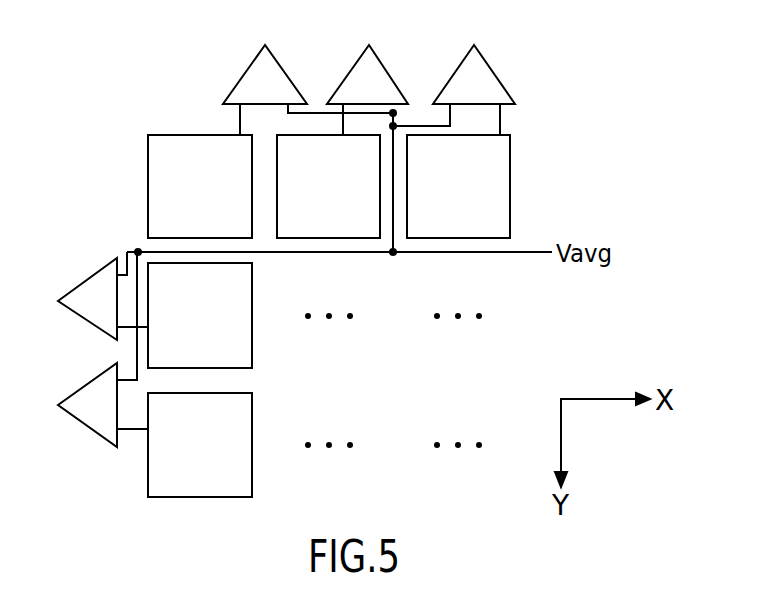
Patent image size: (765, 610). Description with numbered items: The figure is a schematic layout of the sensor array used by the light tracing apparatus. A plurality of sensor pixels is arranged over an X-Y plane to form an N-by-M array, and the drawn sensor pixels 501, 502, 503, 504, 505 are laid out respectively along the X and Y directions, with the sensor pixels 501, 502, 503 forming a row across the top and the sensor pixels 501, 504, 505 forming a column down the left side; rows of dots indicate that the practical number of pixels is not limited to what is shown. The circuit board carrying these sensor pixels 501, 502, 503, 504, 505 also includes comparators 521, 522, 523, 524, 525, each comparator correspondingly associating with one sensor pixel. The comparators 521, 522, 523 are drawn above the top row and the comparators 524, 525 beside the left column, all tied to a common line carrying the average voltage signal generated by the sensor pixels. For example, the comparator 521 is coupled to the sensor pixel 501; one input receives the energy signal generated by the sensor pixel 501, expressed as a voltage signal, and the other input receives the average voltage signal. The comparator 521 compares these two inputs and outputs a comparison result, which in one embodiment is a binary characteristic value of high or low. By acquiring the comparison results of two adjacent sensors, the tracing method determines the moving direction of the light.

The sensor pixel 501 is at (182, 143).
The sensor pixel 502 is at (332, 222).
The sensor pixel 503 is at (460, 223).
The sensor pixel 504 is at (242, 342).
The sensor pixel 505 is at (242, 471).
The comparator 521 is at (273, 78).
The comparator 522 is at (380, 78).
The comparator 523 is at (485, 78).
The comparator 524 is at (87, 292).
The comparator 525 is at (87, 397).